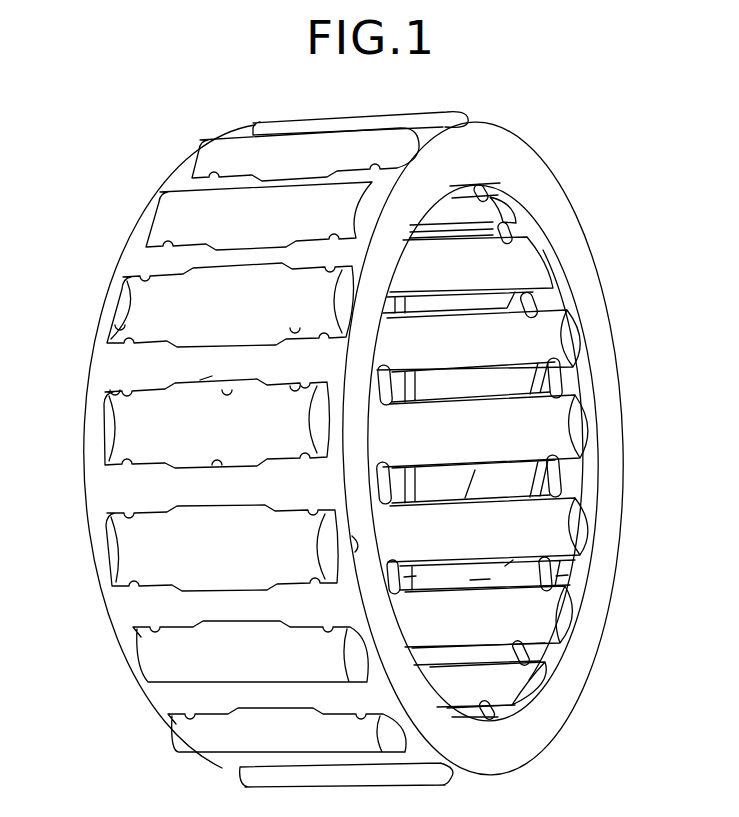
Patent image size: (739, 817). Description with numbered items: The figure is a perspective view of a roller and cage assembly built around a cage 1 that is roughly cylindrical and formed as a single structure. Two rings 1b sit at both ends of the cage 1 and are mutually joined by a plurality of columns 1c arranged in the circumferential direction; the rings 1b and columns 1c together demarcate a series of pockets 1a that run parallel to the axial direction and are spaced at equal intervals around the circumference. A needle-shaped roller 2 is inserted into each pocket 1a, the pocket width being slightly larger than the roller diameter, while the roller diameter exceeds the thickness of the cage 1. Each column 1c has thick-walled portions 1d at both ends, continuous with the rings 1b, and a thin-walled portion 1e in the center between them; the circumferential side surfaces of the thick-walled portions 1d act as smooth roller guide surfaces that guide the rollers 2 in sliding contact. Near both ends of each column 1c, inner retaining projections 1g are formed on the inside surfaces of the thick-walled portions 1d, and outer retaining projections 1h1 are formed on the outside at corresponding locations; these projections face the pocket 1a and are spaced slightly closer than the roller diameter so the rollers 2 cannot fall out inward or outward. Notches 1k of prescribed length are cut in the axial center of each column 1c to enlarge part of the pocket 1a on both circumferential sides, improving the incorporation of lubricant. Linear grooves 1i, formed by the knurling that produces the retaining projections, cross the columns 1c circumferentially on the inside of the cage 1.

The cage 1 is at (570, 183).
The rings 1b is at (572, 221).
The pockets 1a is at (275, 455).
The rollers 2 is at (185, 455).
The inner retaining projections 1g is at (392, 465).
The notches 1k is at (228, 388).
The outer retaining projections 1h1 is at (303, 362).
The columns 1c is at (211, 371).
The linear grooves 1i is at (362, 541).
The thick-walled portions 1d is at (410, 578).
The thin-walled portion 1e is at (480, 583).